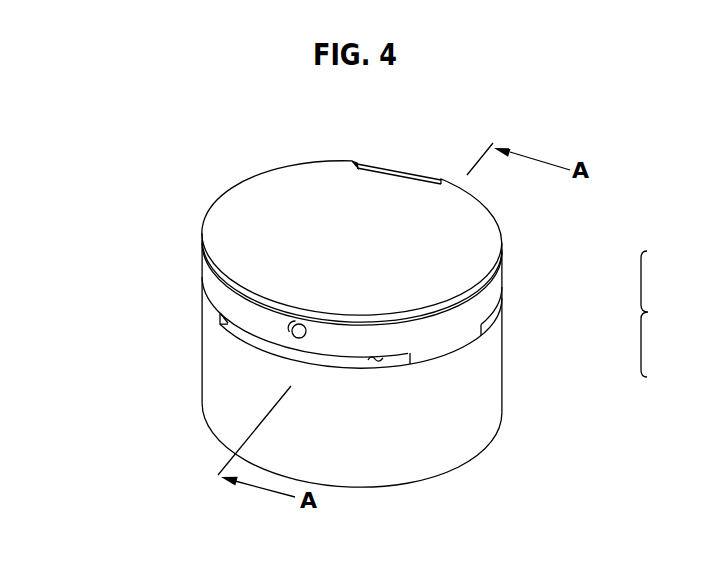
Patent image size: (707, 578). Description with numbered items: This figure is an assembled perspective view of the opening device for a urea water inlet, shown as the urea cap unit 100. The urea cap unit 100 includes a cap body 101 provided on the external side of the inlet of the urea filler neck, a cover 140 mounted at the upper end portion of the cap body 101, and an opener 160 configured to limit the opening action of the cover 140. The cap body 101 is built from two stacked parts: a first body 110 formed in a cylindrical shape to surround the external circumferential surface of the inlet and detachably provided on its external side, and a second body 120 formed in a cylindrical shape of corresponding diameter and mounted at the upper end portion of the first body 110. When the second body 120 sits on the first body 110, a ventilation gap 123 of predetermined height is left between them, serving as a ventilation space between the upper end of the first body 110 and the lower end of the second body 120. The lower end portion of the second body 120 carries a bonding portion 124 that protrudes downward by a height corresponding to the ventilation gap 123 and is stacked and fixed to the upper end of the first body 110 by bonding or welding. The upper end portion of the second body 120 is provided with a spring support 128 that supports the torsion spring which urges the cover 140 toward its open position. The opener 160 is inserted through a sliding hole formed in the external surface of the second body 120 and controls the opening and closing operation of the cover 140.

The urea cap unit 100 is at (187, 233).
The cap body 101 is at (667, 314).
The first body 110 is at (515, 369).
The second body 120 is at (514, 264).
The ventilation gap 123 is at (378, 360).
The bonding portion 124 is at (445, 342).
The spring support 128 is at (401, 169).
The cover 140 is at (255, 207).
The opener 160 is at (291, 330).